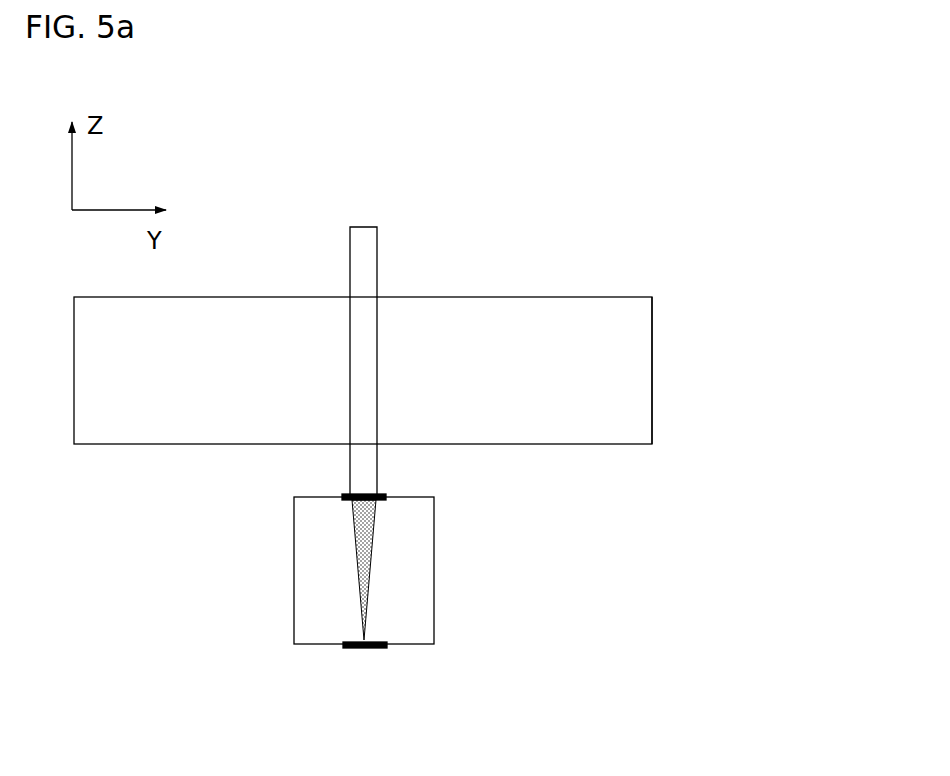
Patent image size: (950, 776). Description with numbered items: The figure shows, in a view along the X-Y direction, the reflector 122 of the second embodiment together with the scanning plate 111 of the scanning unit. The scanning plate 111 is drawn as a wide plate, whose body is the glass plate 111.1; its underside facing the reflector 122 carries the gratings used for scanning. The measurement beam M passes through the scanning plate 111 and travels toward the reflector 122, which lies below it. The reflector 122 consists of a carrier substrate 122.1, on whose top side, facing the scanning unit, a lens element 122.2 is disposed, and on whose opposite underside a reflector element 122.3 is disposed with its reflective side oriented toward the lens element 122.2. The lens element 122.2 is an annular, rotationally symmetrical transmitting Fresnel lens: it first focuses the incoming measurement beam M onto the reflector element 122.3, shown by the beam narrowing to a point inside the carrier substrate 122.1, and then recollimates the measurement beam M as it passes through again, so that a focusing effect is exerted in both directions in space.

The scanning plate 111 is at (664, 348).
The glass plate 111.1 is at (623, 412).
The measurement beam M is at (362, 260).
The reflector 122 is at (385, 590).
The carrier substrate 122.1 is at (418, 584).
The lens element 122.2 is at (340, 498).
The reflector element 122.3 is at (380, 648).